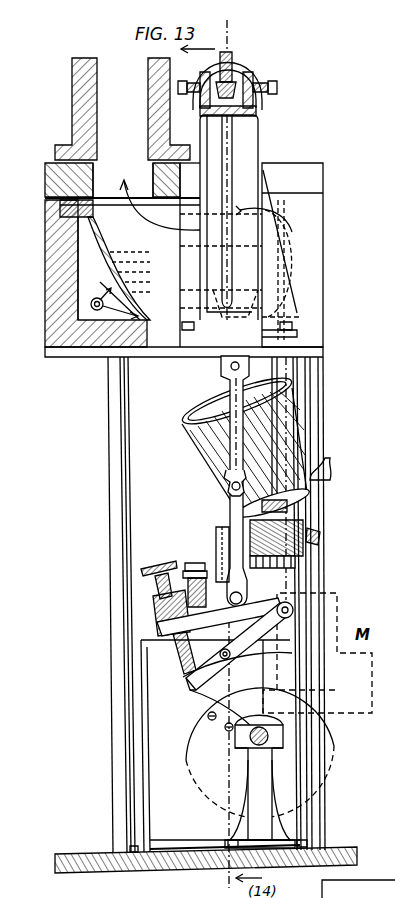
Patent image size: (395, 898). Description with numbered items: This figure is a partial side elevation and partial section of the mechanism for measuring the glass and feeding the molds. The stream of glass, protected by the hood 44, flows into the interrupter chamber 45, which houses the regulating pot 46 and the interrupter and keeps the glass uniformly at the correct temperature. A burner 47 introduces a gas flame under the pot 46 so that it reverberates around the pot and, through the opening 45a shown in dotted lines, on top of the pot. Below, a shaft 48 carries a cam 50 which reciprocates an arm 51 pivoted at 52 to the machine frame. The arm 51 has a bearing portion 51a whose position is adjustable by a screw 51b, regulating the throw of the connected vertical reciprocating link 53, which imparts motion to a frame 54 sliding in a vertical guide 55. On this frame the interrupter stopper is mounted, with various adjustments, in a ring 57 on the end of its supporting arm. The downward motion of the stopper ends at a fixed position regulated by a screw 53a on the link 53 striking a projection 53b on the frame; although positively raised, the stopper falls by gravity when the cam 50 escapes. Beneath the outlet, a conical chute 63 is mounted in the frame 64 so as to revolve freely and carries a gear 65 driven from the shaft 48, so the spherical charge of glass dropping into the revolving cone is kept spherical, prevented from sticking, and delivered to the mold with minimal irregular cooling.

The hood 44 is at (73, 94).
The interrupter chamber 45 is at (46, 254).
The opening 45a is at (296, 233).
The pot 46 is at (104, 277).
The burner 47 is at (95, 311).
The shaft 48 is at (268, 742).
The cam 50 is at (200, 712).
The arm 51 is at (186, 627).
The bearing portion 51a is at (196, 680).
The screw 51b is at (158, 588).
The pivot 52 is at (292, 607).
The vertical reciprocating link 53 is at (236, 520).
The screw 53a is at (228, 467).
The projection 53b is at (216, 540).
The frame 54 is at (247, 150).
The vertical guide 55 is at (262, 268).
The ring 57 is at (262, 78).
The conical chute 63 is at (195, 443).
The frame 64 is at (272, 523).
The gear 65 is at (320, 538).